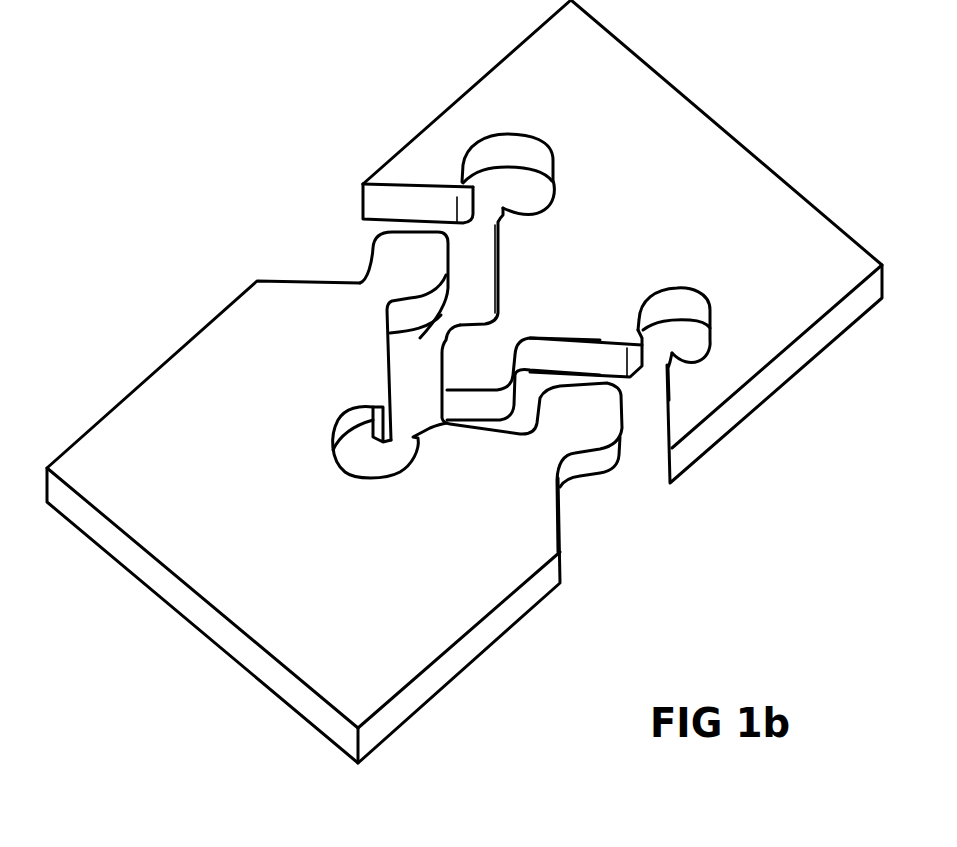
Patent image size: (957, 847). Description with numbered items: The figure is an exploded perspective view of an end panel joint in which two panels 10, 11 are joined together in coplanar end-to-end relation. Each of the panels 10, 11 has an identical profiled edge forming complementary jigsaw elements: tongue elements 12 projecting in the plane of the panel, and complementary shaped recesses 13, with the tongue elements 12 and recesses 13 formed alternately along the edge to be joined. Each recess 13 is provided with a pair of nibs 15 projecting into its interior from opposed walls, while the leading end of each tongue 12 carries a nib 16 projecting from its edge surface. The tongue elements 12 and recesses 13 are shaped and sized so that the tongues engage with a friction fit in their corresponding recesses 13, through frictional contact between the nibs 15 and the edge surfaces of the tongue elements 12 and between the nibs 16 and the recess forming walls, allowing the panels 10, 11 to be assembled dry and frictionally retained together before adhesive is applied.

The panel 10 is at (312, 556).
The panel 11 is at (690, 216).
The tongue element 12 is at (407, 263).
The recess 13 is at (360, 410).
The nib 15 is at (477, 187).
The nib 16 is at (440, 238).